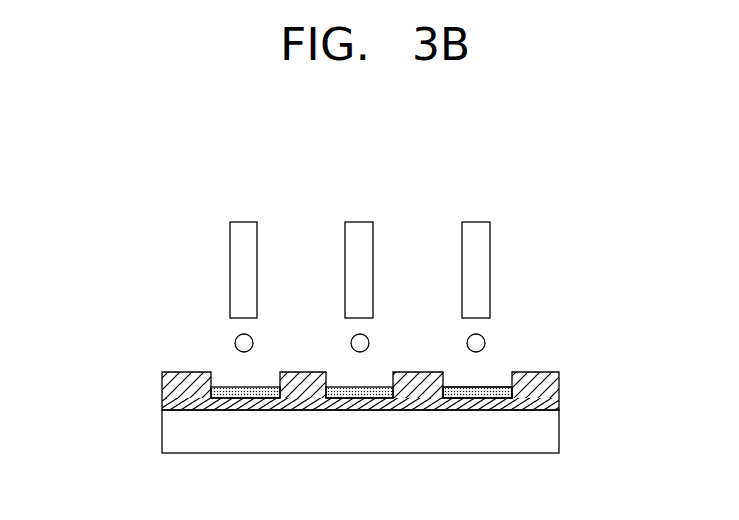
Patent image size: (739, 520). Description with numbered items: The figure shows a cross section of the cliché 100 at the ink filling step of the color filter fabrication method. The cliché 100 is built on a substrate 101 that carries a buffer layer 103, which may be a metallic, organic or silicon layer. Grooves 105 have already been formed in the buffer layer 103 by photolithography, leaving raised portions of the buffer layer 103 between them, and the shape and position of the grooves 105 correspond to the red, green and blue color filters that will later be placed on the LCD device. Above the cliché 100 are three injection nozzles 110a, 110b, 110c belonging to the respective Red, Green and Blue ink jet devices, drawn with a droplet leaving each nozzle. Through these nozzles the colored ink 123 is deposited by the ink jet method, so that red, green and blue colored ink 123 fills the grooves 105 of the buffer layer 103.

The cliché 100 is at (138, 386).
The substrate 101 is at (552, 434).
The buffer layer 103 is at (552, 387).
The grooves 105 is at (485, 380).
The colored ink 123 is at (232, 390).
The injection nozzle 110a is at (243, 228).
The injection nozzle 110b is at (359, 228).
The injection nozzle 110c is at (475, 228).